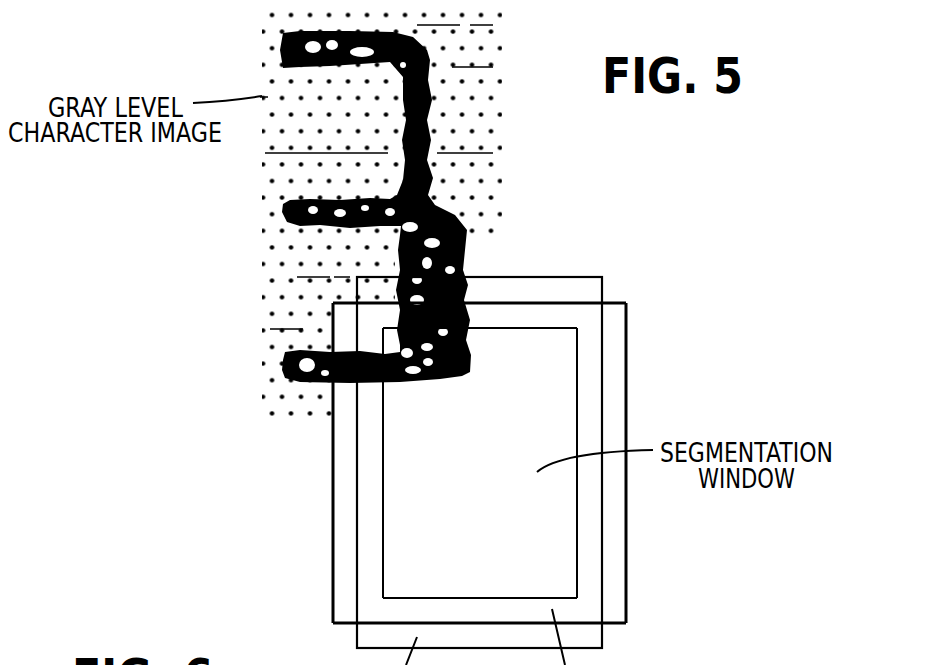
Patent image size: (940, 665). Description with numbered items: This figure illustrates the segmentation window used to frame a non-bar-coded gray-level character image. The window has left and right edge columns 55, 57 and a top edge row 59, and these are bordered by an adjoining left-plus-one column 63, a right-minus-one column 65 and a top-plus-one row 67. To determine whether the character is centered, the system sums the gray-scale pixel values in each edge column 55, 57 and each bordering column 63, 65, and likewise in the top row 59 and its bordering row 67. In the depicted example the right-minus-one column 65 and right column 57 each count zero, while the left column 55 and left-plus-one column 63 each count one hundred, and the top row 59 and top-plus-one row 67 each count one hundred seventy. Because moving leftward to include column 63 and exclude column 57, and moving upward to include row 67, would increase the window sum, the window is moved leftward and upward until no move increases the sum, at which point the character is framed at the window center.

The left edge column 55 is at (373, 470).
The right edge column 57 is at (587, 375).
The top edge row 59 is at (513, 312).
The left+1 column 63 is at (345, 547).
The right-1 column 65 is at (613, 542).
The top+1 row 67 is at (589, 287).